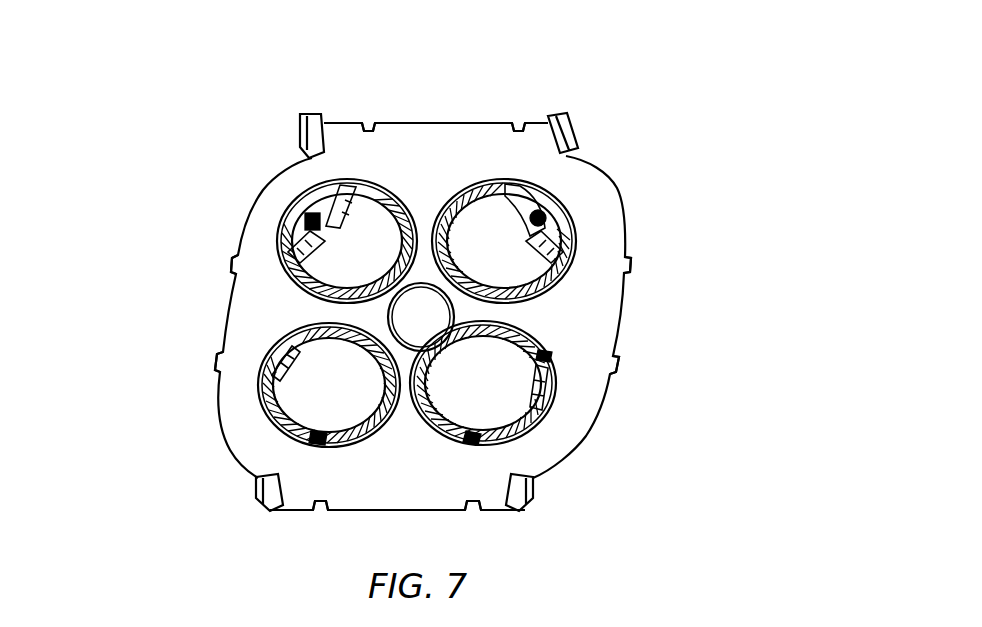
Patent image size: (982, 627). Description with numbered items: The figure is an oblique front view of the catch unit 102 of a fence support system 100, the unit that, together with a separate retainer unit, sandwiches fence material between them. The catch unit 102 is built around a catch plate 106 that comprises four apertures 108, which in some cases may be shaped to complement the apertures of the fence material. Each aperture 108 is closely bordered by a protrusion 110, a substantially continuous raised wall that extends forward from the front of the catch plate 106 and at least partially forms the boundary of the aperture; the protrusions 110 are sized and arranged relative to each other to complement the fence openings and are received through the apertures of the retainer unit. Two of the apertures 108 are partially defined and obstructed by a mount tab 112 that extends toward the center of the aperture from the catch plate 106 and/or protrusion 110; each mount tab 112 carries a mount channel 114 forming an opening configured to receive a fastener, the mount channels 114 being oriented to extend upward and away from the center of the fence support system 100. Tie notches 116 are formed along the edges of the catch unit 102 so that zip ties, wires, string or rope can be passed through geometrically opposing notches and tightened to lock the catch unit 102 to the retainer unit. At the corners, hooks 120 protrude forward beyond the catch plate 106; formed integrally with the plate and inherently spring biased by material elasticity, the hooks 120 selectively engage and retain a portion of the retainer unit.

The fence support system 100 is at (730, 122).
The catch unit 102 is at (588, 397).
The catch plate 106 is at (605, 222).
The apertures 108 is at (372, 186).
The protrusions 110 is at (303, 287).
The mount tab 112 is at (297, 247).
The mount channel 114 is at (311, 213).
The tie notches 116 is at (368, 127).
The hooks 120 is at (320, 118).